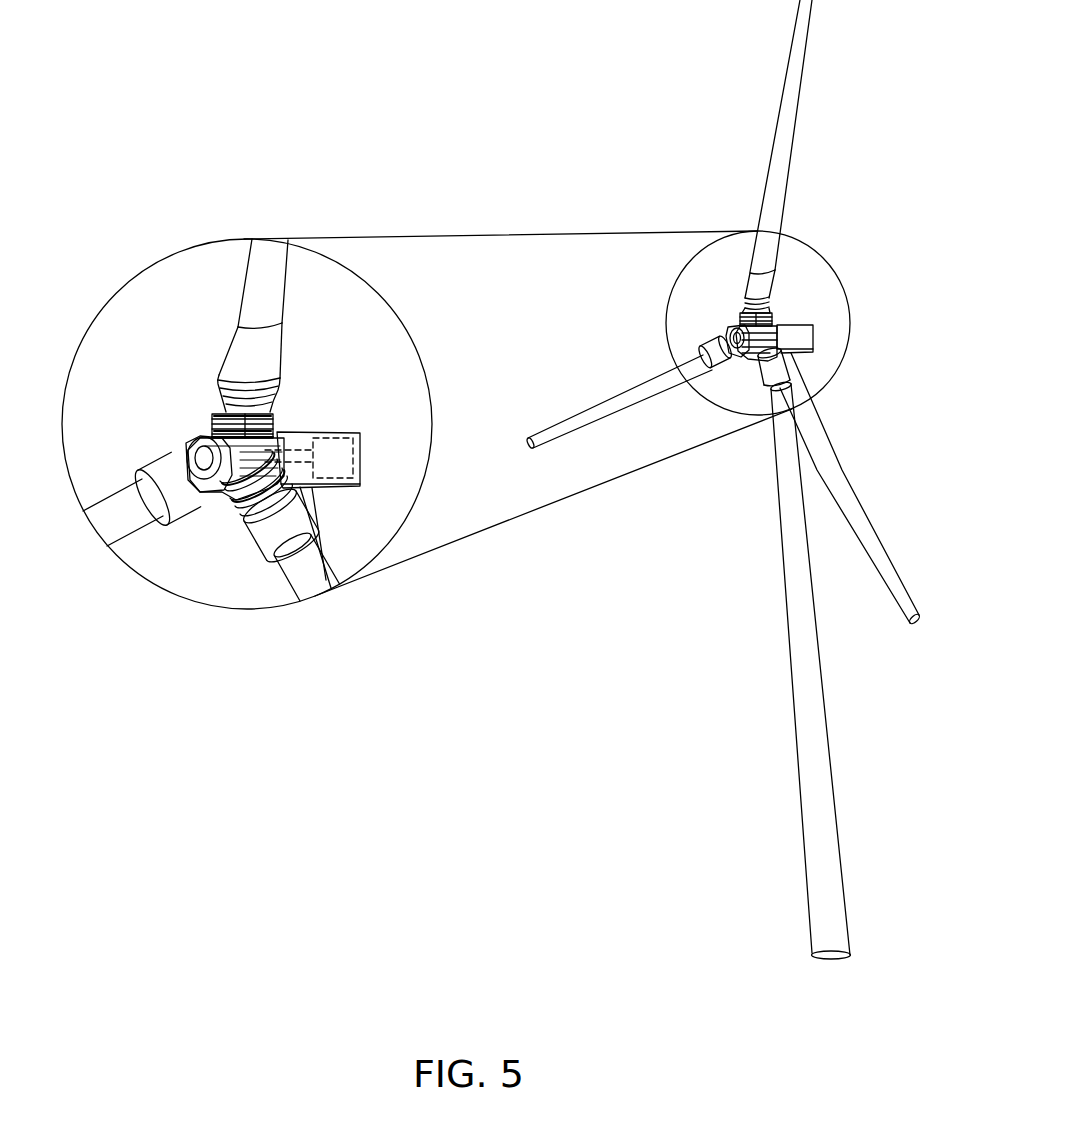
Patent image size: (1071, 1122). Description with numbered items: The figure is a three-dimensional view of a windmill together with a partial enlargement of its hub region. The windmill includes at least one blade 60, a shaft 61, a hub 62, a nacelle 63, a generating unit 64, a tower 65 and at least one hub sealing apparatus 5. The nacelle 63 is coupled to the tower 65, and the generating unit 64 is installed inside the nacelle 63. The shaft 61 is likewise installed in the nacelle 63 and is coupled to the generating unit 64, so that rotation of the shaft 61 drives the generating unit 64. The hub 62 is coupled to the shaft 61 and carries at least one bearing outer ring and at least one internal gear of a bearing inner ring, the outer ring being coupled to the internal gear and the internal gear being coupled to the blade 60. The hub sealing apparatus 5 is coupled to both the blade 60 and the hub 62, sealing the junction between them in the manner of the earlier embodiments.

The hub sealing apparatus 5 is at (198, 546).
The blade 60 is at (264, 548).
The shaft 61 is at (296, 449).
The hub 62 is at (208, 430).
The nacelle 63 is at (362, 457).
The generating unit 64 is at (334, 438).
The tower 65 is at (310, 512).